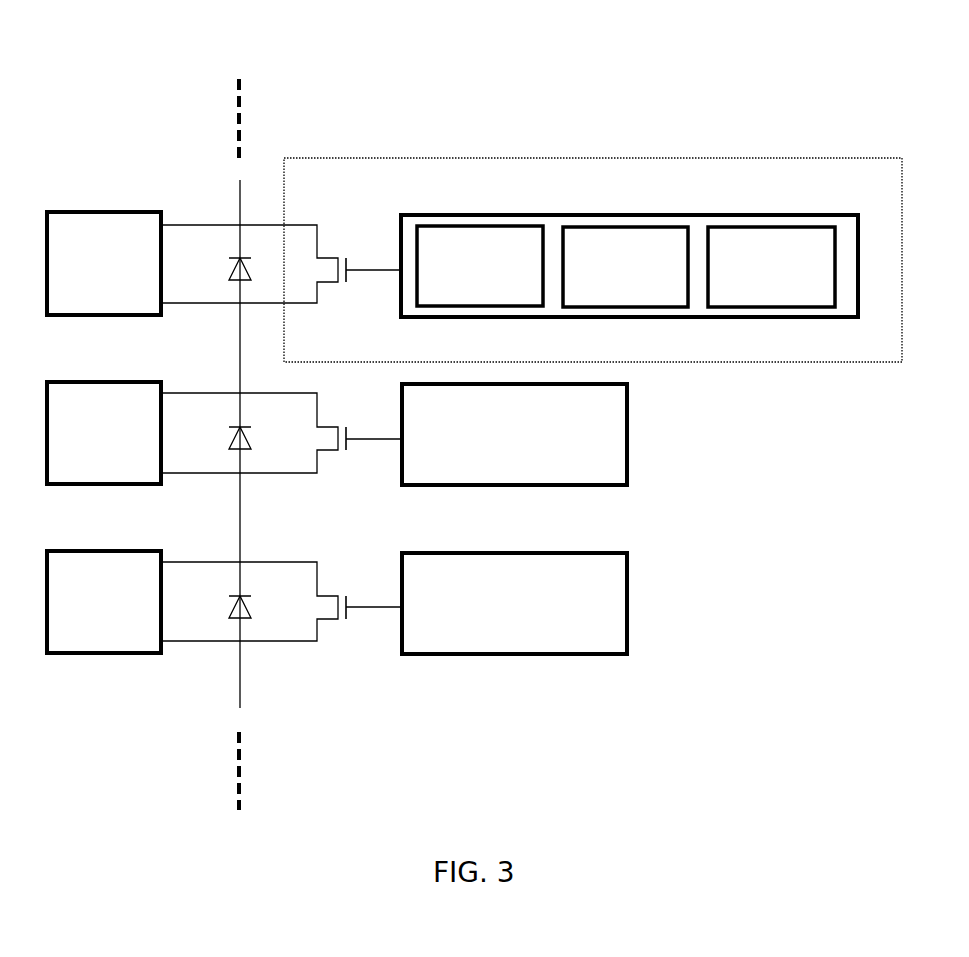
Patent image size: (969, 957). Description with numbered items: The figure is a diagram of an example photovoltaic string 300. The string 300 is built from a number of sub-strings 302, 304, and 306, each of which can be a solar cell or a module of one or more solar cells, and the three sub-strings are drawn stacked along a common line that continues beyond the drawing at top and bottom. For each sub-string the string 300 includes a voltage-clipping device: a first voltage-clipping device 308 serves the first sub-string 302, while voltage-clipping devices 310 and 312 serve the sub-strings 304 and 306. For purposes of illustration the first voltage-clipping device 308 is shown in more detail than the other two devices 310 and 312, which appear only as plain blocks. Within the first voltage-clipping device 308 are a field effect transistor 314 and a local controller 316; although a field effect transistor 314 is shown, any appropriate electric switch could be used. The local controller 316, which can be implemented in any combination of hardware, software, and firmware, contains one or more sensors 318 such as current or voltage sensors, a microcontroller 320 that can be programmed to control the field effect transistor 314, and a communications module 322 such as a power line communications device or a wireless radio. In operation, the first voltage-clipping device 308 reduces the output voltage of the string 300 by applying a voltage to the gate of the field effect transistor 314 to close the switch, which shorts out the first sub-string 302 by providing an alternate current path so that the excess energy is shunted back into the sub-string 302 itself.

The photovoltaic string 300 is at (247, 43).
The first sub-string 302 is at (116, 212).
The sub-string 304 is at (116, 382).
The sub-string 306 is at (116, 551).
The first voltage-clipping device 308 is at (465, 158).
The voltage-clipping device 310 is at (672, 419).
The voltage-clipping device 312 is at (672, 588).
The field effect transistor 314 is at (334, 244).
The local controller 316 is at (655, 215).
The sensors 318 is at (463, 291).
The microcontroller 320 is at (609, 291).
The communications module 322 is at (754, 291).